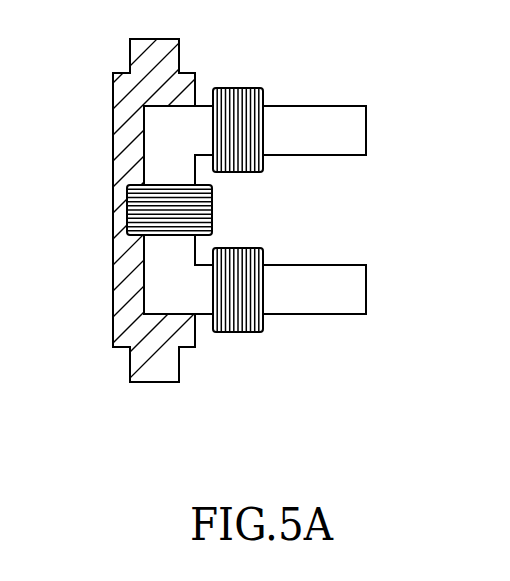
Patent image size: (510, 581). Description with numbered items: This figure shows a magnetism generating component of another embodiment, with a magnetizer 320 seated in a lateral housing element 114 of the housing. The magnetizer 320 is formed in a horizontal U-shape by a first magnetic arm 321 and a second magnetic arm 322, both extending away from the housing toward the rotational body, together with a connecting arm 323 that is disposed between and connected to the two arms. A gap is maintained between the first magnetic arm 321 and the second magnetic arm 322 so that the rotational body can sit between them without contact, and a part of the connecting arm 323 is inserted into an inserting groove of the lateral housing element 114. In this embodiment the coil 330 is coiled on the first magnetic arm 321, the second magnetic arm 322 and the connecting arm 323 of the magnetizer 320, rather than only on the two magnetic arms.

The lateral housing element 114 is at (90, 102).
The magnetizer 320 is at (296, 168).
The first magnetic arm 321 is at (352, 128).
The second magnetic arm 322 is at (352, 292).
The connecting arm 323 is at (187, 175).
The coil 330 is at (240, 88).